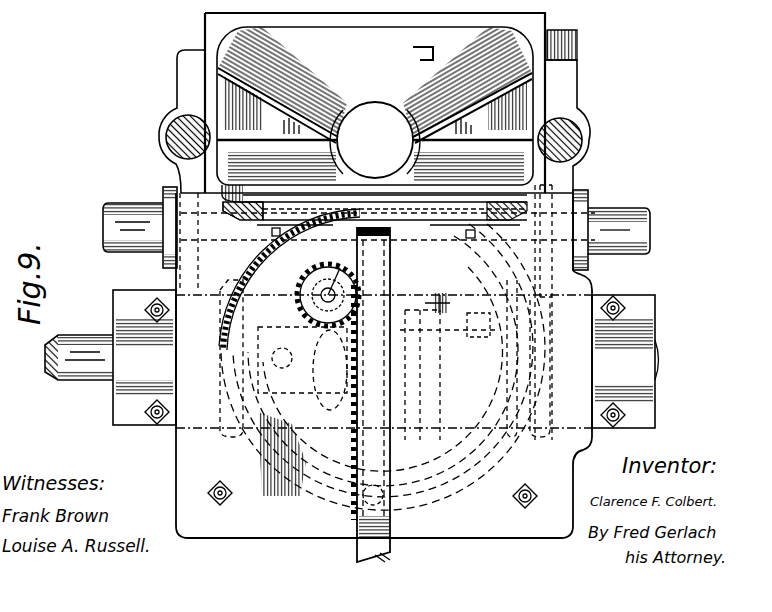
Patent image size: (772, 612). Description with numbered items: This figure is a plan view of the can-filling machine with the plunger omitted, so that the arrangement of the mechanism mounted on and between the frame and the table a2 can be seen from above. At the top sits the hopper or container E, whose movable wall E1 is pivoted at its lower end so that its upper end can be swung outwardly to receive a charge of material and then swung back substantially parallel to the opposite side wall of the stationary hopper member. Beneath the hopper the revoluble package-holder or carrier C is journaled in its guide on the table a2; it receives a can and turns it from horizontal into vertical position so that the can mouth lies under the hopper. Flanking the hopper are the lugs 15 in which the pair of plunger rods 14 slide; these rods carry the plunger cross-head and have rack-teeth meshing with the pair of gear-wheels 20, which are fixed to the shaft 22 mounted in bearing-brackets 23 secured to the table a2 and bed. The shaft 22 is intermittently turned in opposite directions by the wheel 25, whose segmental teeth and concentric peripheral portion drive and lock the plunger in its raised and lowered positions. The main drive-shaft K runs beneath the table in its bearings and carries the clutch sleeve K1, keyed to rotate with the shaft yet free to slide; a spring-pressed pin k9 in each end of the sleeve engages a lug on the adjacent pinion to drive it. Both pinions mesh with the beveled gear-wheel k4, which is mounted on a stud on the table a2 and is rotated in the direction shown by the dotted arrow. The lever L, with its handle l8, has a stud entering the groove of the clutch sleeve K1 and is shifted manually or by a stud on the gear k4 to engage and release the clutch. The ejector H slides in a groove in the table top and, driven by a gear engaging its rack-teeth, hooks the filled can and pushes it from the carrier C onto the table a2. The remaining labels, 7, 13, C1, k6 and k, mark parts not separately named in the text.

The rack bar 7 is at (371, 409).
The bracket end 13 is at (228, 268).
The rods 14 is at (163, 126).
The lugs 15 is at (160, 142).
The gear-wheels 20 is at (173, 180).
The shaft 22 is at (103, 227).
The bearing-brackets 23 is at (120, 203).
The wheel 25 is at (583, 287).
The hopper E is at (440, 173).
The movable wall E1 is at (391, 103).
The package-holder or carrier C is at (250, 213).
The sector gear arcs C1 is at (382, 359).
The main drive-shaft K is at (82, 334).
The clutch sleeve K1 is at (113, 315).
The table a2 is at (385, 361).
The pinion k6 is at (312, 368).
The spring-pressed pin k9 is at (300, 330).
The ejector H is at (430, 397).
The lever L is at (433, 467).
The beveled gear-wheel k4 is at (480, 503).
The rack teeth k is at (353, 523).
The handle l8 is at (398, 545).